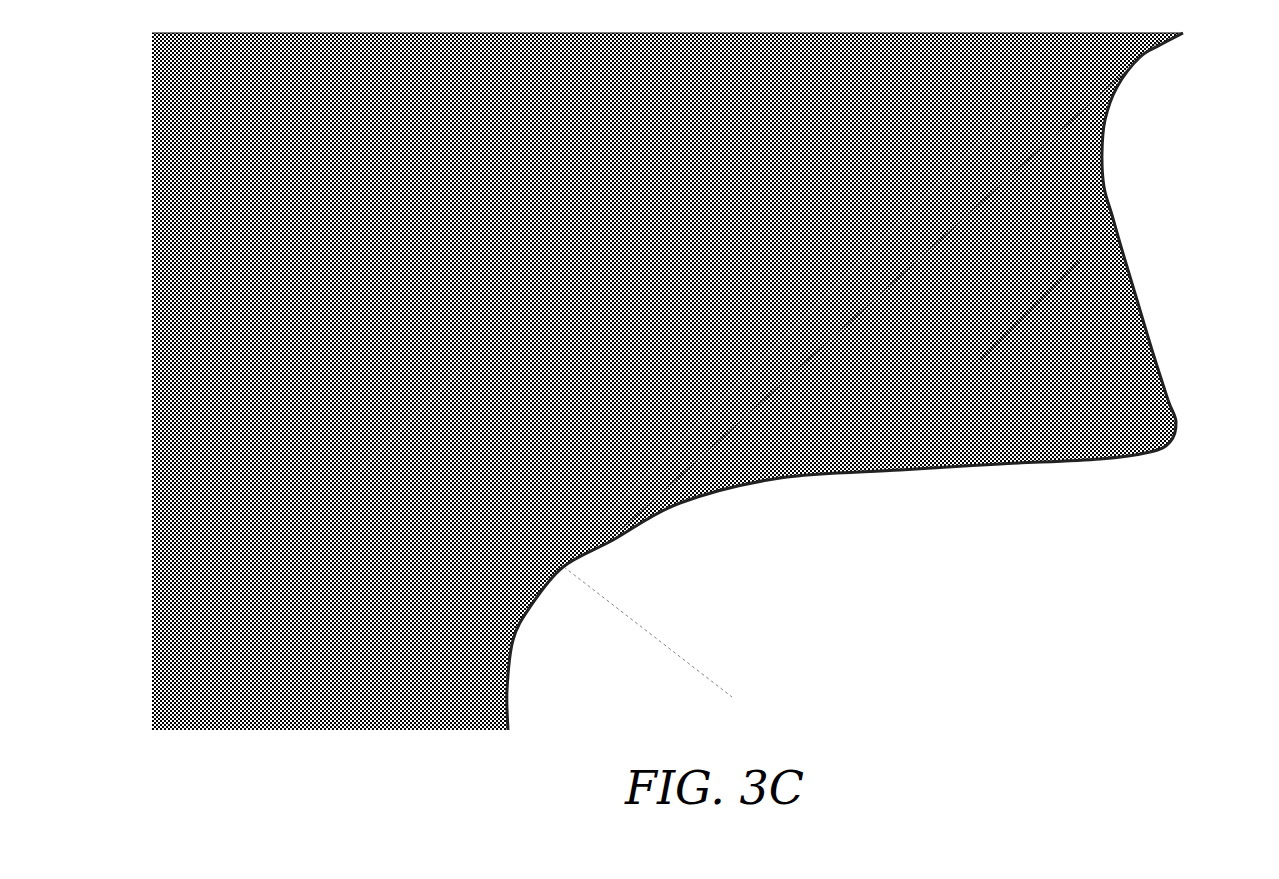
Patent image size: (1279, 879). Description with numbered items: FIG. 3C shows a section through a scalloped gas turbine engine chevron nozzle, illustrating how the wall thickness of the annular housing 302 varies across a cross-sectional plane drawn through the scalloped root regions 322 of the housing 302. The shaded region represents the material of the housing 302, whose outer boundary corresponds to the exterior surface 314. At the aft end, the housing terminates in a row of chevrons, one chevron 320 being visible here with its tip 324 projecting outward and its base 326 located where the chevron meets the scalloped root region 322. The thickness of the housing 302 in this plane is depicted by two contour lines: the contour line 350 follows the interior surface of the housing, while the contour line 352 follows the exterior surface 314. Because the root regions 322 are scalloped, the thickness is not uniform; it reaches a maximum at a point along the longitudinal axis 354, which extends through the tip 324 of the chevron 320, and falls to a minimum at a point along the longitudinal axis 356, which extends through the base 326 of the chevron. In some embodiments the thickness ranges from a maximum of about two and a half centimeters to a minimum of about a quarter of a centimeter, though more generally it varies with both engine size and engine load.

The annular housing 302 is at (268, 138).
The exterior surface 314 is at (768, 78).
The chevron 320 is at (1116, 332).
The root region 322 is at (528, 532).
The tip 324 is at (1162, 426).
The base 326 is at (564, 567).
The contour line 350 is at (943, 209).
The contour line 352 is at (922, 190).
The longitudinal axis 354 is at (1006, 320).
The longitudinal axis 356 is at (389, 443).